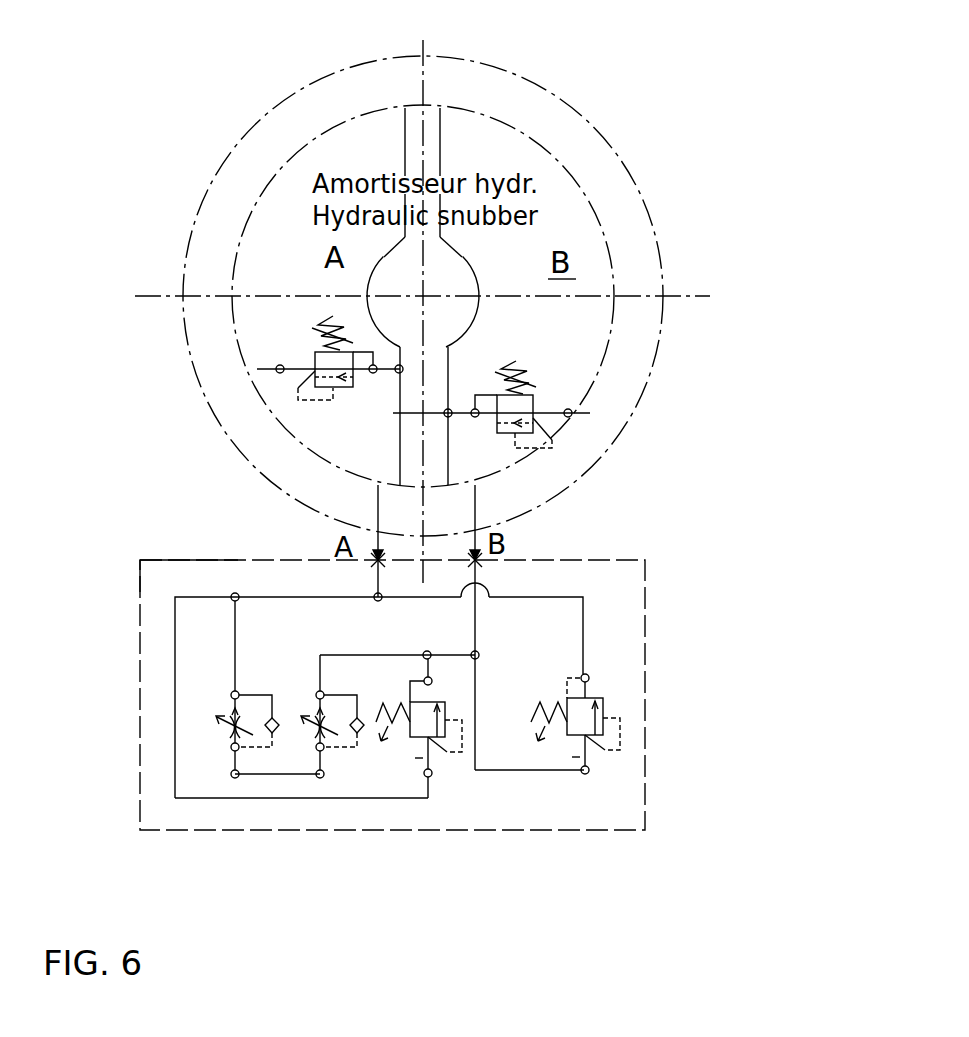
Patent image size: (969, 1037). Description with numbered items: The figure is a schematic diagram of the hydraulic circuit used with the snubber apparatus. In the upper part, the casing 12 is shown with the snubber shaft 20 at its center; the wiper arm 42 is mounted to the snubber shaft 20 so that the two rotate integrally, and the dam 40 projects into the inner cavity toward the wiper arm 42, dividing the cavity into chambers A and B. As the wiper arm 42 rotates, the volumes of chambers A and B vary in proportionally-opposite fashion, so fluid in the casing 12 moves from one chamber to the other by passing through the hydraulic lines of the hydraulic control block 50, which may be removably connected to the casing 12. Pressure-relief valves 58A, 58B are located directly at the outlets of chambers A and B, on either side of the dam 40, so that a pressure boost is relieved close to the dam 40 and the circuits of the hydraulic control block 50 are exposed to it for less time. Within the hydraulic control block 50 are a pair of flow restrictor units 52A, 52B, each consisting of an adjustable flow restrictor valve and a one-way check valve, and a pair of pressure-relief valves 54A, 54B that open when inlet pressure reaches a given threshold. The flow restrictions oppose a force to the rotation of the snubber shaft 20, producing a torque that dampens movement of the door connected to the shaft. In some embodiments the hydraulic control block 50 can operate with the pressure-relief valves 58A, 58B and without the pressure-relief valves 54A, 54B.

The casing 12 is at (545, 105).
The wiper arm 42 is at (405, 148).
The snubber shaft 20 is at (424, 296).
The dam 40 is at (406, 455).
The pressure-relief valve 58A is at (321, 352).
The pressure-relief valve 58B is at (535, 398).
The hydraulic control block 50 is at (353, 686).
The flow restrictor unit 52A is at (308, 745).
The flow restrictor unit 52B is at (212, 725).
The pressure-relief valve 54A is at (412, 752).
The pressure-relief valve 54B is at (564, 750).